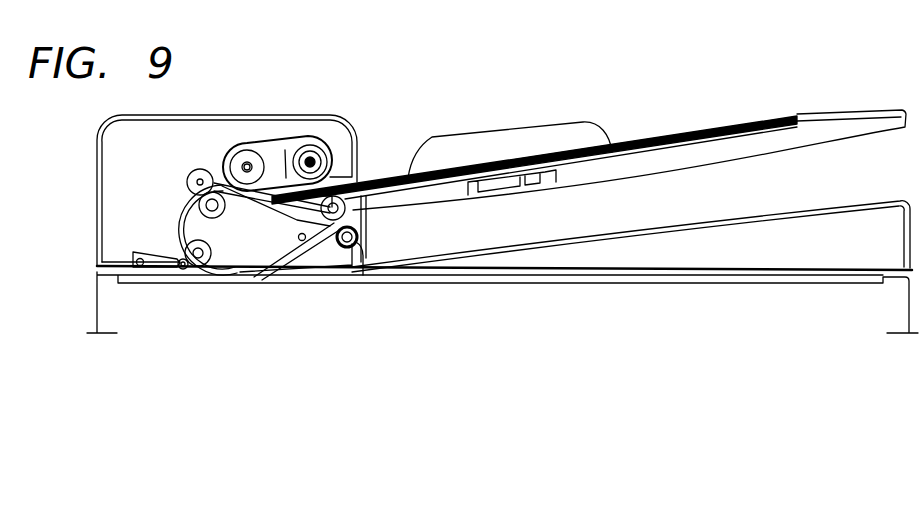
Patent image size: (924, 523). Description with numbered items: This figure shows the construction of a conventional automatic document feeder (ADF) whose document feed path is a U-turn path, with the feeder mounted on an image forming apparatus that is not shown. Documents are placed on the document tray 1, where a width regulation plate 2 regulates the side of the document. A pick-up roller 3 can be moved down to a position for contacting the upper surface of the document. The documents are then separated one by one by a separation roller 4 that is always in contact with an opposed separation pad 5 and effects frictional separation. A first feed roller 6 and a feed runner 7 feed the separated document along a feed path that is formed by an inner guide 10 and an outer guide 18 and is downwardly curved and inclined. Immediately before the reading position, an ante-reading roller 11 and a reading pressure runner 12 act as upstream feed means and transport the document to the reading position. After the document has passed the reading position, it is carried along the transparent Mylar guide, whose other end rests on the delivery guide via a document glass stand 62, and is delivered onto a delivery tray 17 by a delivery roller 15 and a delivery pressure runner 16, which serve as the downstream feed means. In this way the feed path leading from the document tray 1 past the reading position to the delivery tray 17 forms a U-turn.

The document tray 1 is at (865, 118).
The width regulation plate 2 is at (558, 127).
The pick-up roller 3 is at (327, 138).
The separation roller 4 is at (243, 152).
The separation pad 5 is at (262, 168).
The first feed roller 6 is at (201, 196).
The feed runner 7 is at (191, 172).
The inner guide 10 is at (208, 223).
The ante-reading roller 11 is at (182, 247).
The reading pressure runner 12 is at (181, 270).
The delivery roller 15 is at (366, 182).
The delivery pressure runner 16 is at (357, 250).
The delivery tray 17 is at (578, 241).
The outer guide 18 is at (192, 197).
The document glass stand 62 is at (648, 281).